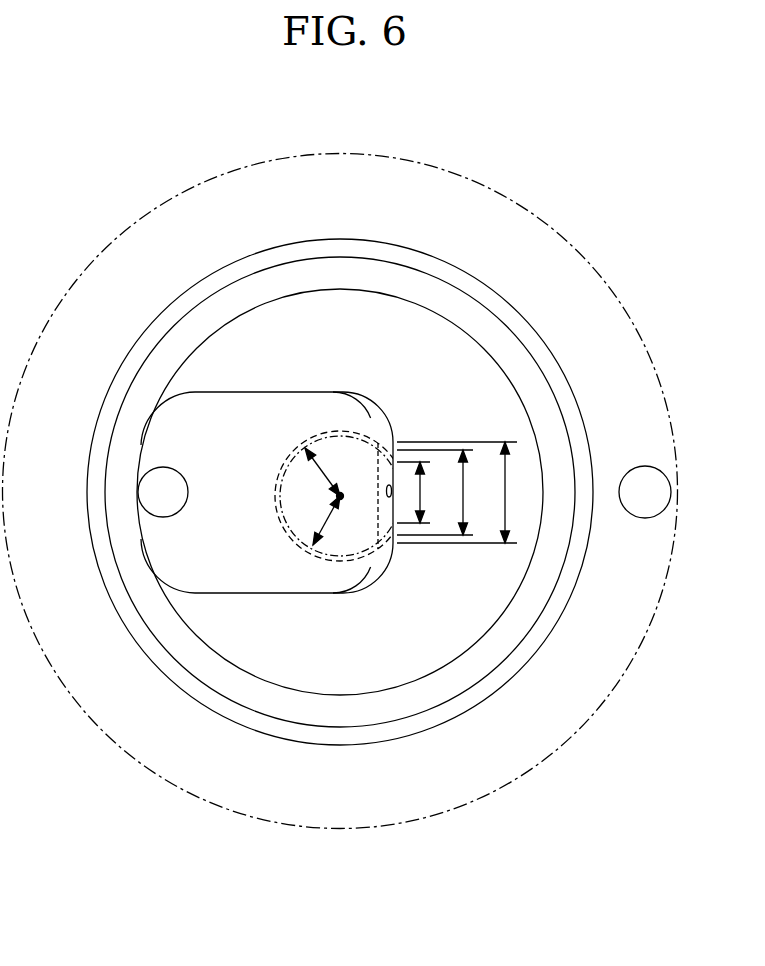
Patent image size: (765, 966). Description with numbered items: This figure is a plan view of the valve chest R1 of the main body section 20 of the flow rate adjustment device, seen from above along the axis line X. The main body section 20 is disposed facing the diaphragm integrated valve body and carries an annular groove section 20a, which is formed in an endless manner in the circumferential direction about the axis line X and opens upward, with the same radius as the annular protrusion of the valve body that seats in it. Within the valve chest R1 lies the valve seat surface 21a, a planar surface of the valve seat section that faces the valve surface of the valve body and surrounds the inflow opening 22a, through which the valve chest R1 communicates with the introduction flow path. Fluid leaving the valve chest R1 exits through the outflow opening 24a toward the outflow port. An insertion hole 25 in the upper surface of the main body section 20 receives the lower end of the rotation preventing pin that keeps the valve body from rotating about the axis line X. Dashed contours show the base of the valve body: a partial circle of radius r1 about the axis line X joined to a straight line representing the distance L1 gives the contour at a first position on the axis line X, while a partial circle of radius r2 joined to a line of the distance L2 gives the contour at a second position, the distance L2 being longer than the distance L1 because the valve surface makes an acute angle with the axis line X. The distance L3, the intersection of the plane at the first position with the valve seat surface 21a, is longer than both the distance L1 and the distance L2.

The main body section 20 is at (568, 717).
The annular groove section 20a is at (423, 713).
The valve seat surface 21a is at (390, 540).
The inflow opening 22a is at (386, 480).
The outflow opening 24a is at (163, 492).
The insertion hole 25 is at (622, 494).
The axis line X is at (340, 496).
The radius r1 is at (318, 520).
The radius r2 is at (327, 472).
The valve chest R1 is at (262, 553).
The distance L1 is at (423, 492).
The distance L2 is at (444, 492).
The distance L3 is at (465, 492).